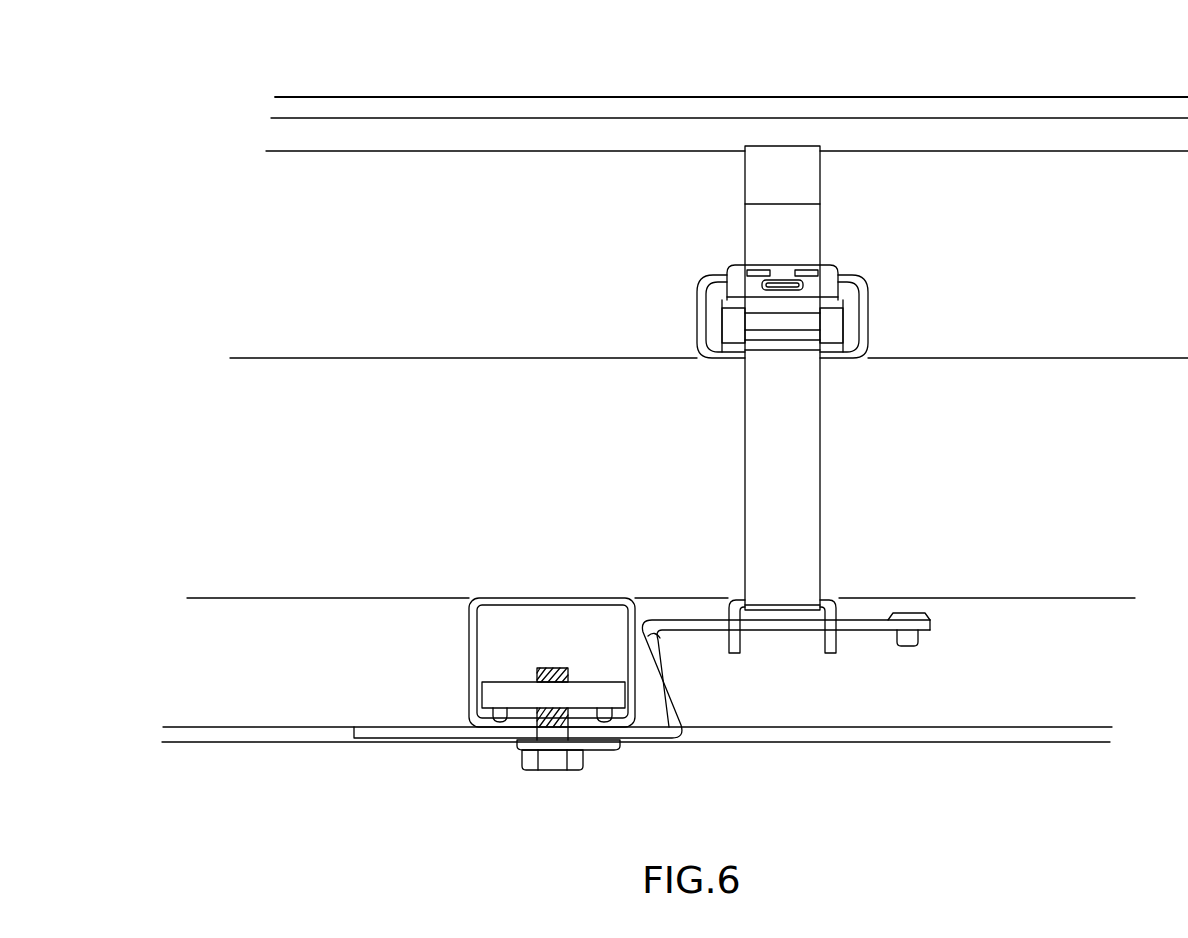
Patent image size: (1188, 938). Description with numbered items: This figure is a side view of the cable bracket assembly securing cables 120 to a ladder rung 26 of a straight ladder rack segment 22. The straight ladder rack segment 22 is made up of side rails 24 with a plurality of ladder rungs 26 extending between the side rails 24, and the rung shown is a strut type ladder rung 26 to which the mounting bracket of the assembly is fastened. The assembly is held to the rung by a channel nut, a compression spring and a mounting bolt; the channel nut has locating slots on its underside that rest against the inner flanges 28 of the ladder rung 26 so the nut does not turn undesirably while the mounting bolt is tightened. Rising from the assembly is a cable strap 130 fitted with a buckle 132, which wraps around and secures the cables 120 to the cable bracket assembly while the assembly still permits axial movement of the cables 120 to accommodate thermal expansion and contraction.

The straight ladder rack segment 22 is at (880, 97).
The side rail 24 is at (883, 695).
The ladder rung 26 is at (470, 677).
The inner flange 28 is at (490, 722).
The cable 120 is at (1041, 492).
The cable strap 130 is at (772, 473).
The buckle 132 is at (850, 297).